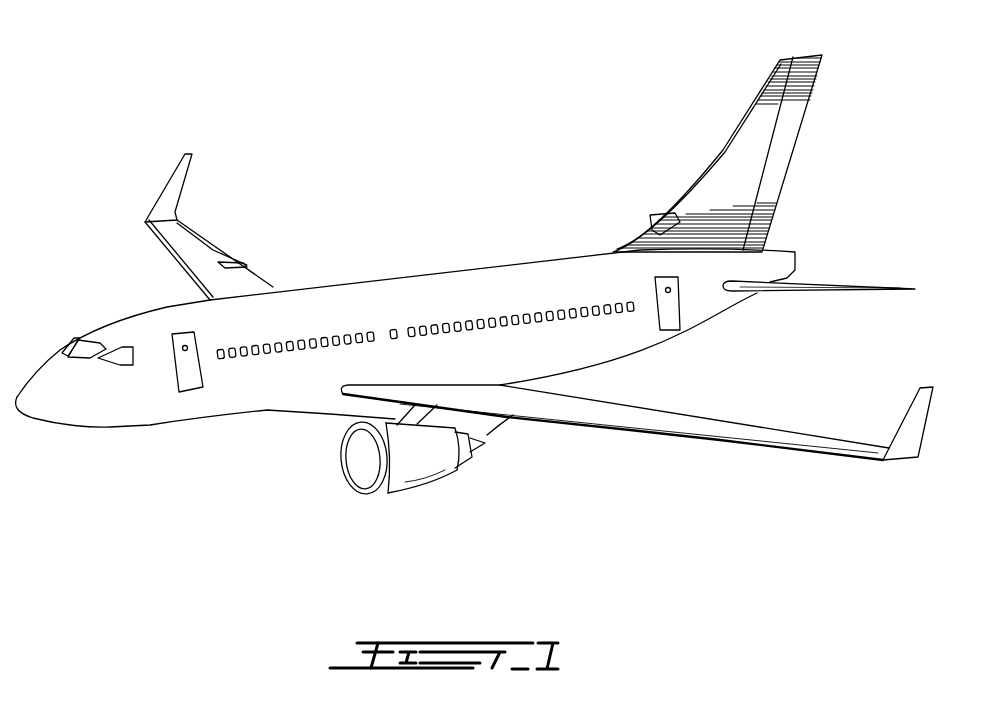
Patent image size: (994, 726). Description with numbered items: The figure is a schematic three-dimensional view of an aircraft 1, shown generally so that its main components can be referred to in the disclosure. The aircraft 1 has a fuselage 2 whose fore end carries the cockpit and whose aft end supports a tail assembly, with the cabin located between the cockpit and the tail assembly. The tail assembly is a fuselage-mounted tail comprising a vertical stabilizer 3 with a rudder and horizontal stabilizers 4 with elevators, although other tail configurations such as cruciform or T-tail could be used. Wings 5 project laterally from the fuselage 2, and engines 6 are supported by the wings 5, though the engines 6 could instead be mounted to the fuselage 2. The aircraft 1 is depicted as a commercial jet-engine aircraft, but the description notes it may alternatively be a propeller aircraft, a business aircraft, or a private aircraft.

The aircraft 1 is at (388, 230).
The fuselage 2 is at (236, 395).
The vertical stabilizer 3 is at (740, 152).
The horizontal stabilizers 4 is at (660, 222).
The wings 5 is at (198, 257).
The engines 6 is at (440, 467).